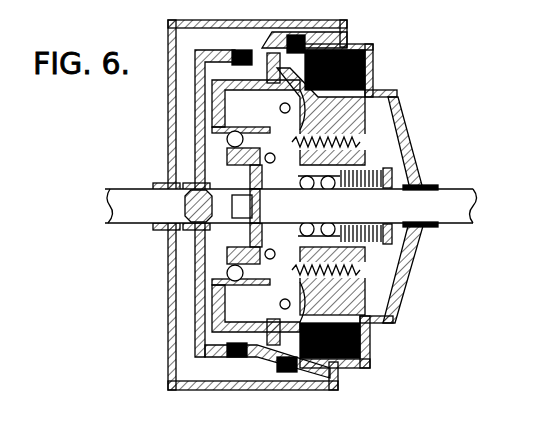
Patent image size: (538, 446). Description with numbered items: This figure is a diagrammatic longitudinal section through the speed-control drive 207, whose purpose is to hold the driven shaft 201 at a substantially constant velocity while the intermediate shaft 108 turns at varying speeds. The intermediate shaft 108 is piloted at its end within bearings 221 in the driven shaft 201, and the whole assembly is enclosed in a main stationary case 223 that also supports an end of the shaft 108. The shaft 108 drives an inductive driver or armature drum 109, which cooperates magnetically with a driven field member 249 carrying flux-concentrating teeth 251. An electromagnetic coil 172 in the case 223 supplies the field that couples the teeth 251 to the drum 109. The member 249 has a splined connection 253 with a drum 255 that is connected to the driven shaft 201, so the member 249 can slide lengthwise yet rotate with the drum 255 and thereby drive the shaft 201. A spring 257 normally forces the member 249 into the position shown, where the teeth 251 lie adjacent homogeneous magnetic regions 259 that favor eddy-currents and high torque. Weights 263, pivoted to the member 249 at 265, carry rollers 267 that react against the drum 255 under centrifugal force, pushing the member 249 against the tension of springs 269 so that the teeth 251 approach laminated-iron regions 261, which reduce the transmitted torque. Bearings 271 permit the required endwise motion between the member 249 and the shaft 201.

The intermediate shaft 108 is at (112, 205).
The inductive driver 109 is at (200, 113).
The electromagnetic coil 172 is at (366, 80).
The driven shaft 201 is at (470, 195).
The speed-control drive 207 is at (160, 89).
The bearings 221 is at (186, 229).
The main stationary case 223 is at (345, 24).
The driven field member 249 is at (335, 118).
The teeth 251 is at (183, 44).
The splined connection 253 is at (232, 133).
The drum 255 is at (227, 258).
The spring 257 is at (368, 247).
The homogeneous magnetic regions 259 is at (172, 21).
The laminated-iron regions 261 is at (371, 47).
The weights 263 is at (225, 110).
The pivot 265 is at (372, 70).
The rollers 267 is at (227, 155).
The springs 269 is at (352, 150).
The bearings 271 is at (392, 182).